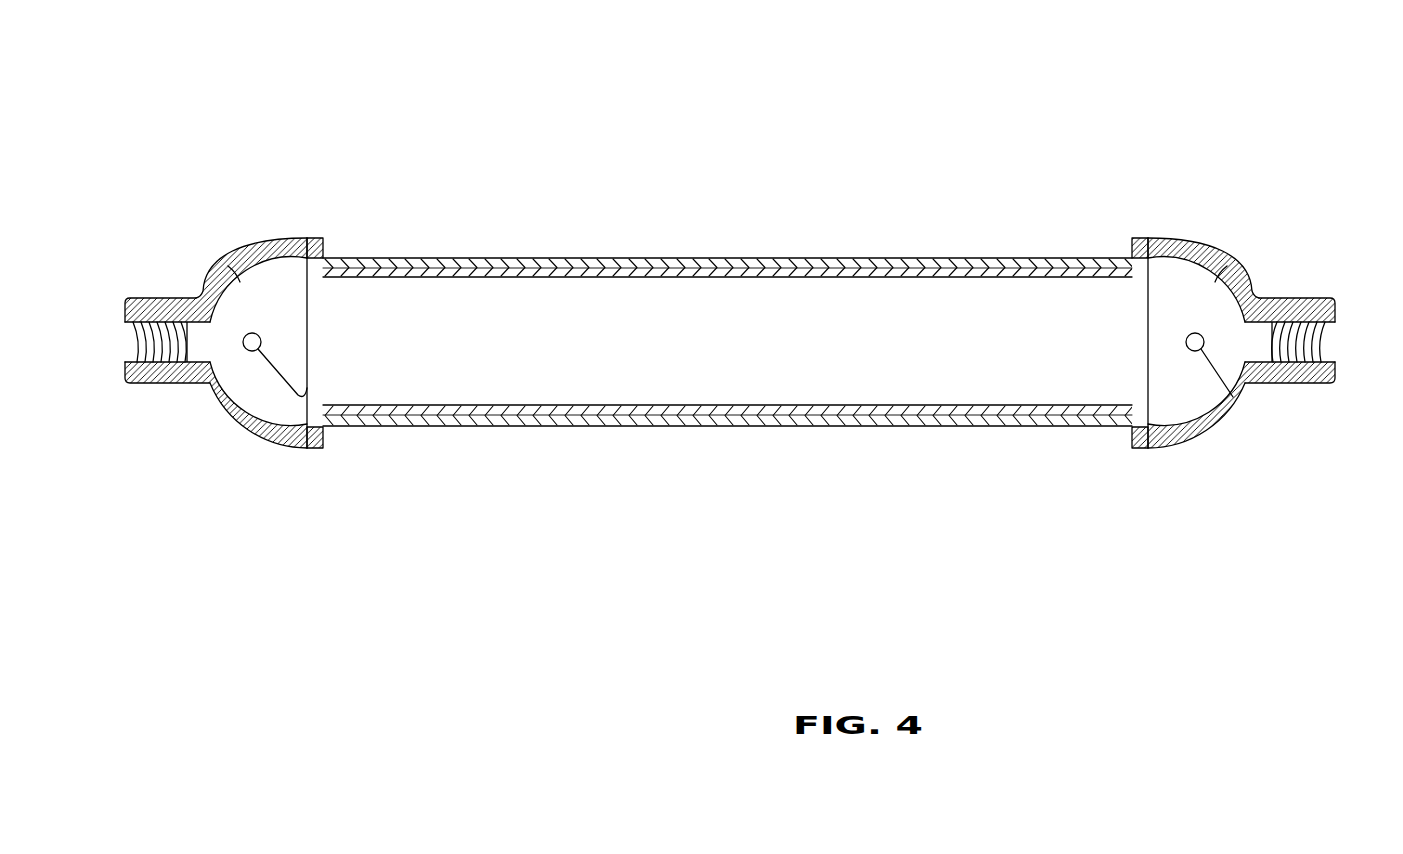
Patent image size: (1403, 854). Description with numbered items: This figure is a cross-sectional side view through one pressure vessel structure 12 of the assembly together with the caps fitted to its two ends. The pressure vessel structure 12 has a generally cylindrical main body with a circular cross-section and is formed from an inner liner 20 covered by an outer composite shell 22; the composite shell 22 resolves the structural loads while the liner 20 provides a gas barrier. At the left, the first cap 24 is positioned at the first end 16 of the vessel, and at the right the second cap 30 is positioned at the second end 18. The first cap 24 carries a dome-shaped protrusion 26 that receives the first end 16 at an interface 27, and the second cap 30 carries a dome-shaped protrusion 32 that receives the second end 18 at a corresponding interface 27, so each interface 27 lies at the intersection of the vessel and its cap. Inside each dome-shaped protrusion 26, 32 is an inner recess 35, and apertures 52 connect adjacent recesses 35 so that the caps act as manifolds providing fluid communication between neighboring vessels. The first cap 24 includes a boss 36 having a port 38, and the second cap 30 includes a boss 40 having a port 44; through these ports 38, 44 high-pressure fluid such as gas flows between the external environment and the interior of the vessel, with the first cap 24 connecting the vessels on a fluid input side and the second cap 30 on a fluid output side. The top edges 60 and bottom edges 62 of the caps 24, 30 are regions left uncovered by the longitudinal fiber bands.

The pressure vessel structure 12 is at (450, 140).
The first end 16 is at (345, 250).
The second end 18 is at (1103, 250).
The inner liner 20 is at (567, 270).
The outer composite shell 22 is at (622, 266).
The first cap 24 is at (242, 452).
The dome-shaped protrusion 26 is at (257, 245).
The interface 27 is at (309, 238).
The second cap 30 is at (1222, 233).
The dome-shaped protrusion 32 is at (1190, 240).
The inner recess 35 is at (238, 278).
The boss 36 is at (173, 298).
The port 38 is at (127, 343).
The boss 40 is at (1300, 384).
The port 44 is at (1334, 337).
The aperture 52 is at (306, 386).
The top edge 60 is at (324, 238).
The bottom edge 62 is at (318, 448).